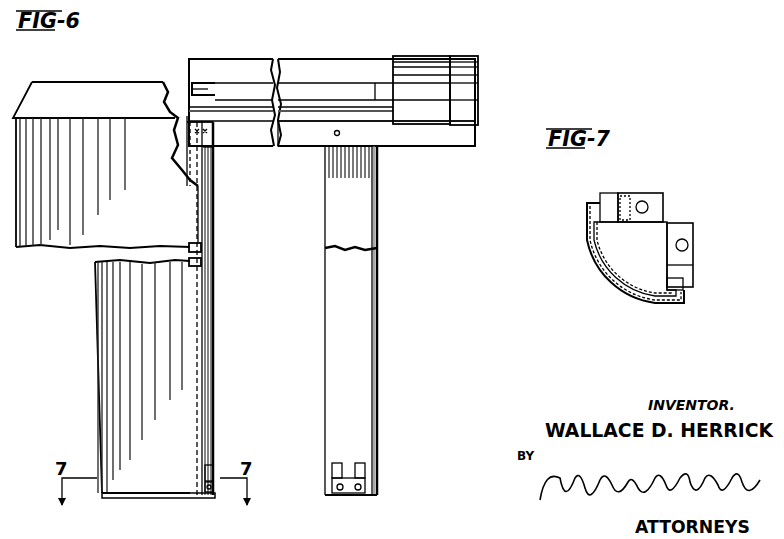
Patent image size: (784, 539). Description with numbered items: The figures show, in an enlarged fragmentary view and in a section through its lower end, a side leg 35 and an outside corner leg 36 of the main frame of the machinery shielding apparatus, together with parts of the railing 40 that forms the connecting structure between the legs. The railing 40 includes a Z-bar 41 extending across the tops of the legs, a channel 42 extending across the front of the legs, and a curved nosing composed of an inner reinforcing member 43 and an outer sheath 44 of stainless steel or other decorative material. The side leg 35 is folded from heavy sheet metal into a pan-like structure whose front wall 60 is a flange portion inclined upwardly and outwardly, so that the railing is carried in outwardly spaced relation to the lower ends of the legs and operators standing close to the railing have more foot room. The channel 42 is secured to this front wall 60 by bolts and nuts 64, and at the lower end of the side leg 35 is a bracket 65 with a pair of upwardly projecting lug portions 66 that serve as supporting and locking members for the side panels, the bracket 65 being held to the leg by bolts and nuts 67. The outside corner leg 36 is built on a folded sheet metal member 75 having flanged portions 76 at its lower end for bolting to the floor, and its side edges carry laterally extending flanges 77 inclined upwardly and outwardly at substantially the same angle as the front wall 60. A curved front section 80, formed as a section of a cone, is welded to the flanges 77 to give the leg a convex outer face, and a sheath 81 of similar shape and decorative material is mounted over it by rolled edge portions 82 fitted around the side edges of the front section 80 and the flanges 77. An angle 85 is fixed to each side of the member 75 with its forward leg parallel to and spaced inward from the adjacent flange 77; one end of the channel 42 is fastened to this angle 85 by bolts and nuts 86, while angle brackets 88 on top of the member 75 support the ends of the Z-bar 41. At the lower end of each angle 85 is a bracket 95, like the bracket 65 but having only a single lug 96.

In FIG. 6, the side leg 35 is at (367, 230).
In FIG. 6, the outside corner leg 36 is at (84, 289).
In FIG. 7, the outside corner leg 36 is at (582, 239).
In FIG. 6, the railing 40 is at (488, 57).
In FIG. 6, the Z-bar 41 is at (286, 66).
In FIG. 6, the channel 42 is at (300, 135).
In FIG. 6, the inner reinforcing member 43 is at (410, 64).
In FIG. 6, the outer sheath 44 is at (463, 62).
In FIG. 6, the front wall 60 is at (328, 238).
In FIG. 6, the bolts and nuts 64 is at (340, 133).
In FIG. 6, the bracket 65 is at (358, 496).
In FIG. 6, the lug portions 66 is at (334, 469).
In FIG. 6, the bolts and nuts 67 is at (340, 491).
In FIG. 6, the folded sheet metal member 75 is at (52, 88).
In FIG. 7, the folded sheet metal member 75 is at (668, 240).
In FIG. 6, the flanged portions 76 is at (166, 497).
In FIG. 7, the flanged portions 76 is at (656, 205).
In FIG. 6, the flanges 77 is at (200, 165).
In FIG. 7, the flanges 77 is at (588, 215).
In FIG. 6, the curved front section 80 is at (198, 183).
In FIG. 7, the curved front section 80 is at (604, 258).
In FIG. 6, the sheath 81 is at (128, 130).
In FIG. 7, the sheath 81 is at (603, 272).
In FIG. 6, the rolled edge portions 82 is at (205, 345).
In FIG. 7, the rolled edge portions 82 is at (592, 205).
In FIG. 6, the angle 85 is at (212, 244).
In FIG. 7, the angle 85 is at (632, 195).
In FIG. 6, the bolts and nuts 86 is at (187, 118).
In FIG. 6, the angle brackets 88 is at (205, 82).
In FIG. 6, the bracket 95 is at (213, 494).
In FIG. 6, the lug 96 is at (212, 466).